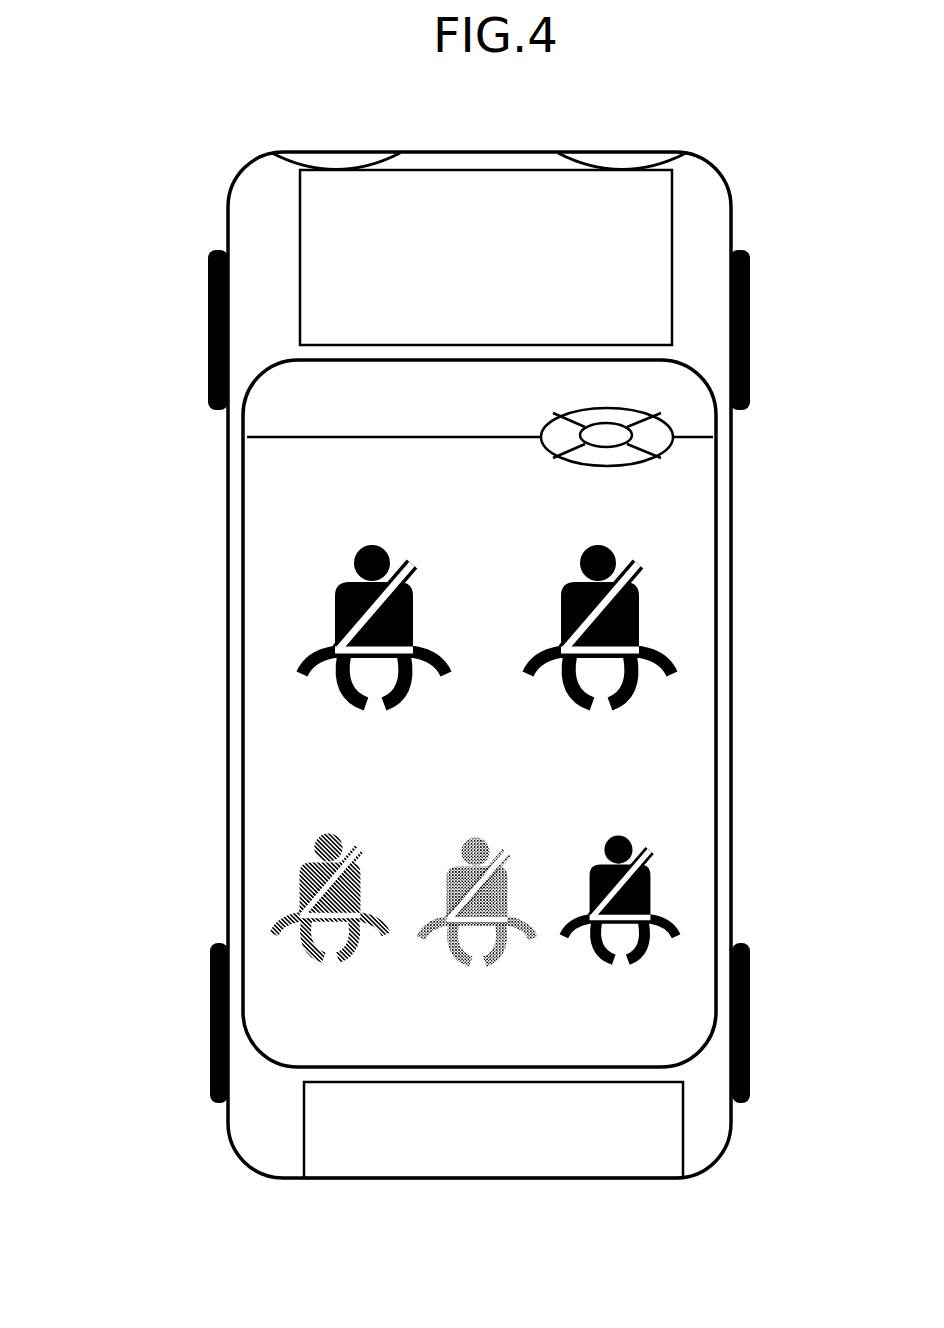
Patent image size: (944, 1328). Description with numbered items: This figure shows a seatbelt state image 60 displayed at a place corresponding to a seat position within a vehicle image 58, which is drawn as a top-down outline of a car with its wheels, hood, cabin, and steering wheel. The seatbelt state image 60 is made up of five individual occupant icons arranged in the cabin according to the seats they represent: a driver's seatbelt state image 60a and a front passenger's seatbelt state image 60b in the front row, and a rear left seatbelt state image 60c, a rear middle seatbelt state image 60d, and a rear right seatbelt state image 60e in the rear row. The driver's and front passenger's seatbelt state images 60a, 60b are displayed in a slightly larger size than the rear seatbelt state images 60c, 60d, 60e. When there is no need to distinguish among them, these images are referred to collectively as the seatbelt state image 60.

The vehicle image 58 is at (730, 205).
The seatbelt state image 60 is at (118, 566).
The driver's seatbelt state image 60a is at (635, 593).
The front passenger's seatbelt state image 60b is at (338, 600).
The rear left seatbelt state image 60c is at (300, 893).
The rear middle seatbelt state image 60d is at (490, 957).
The rear right seatbelt state image 60e is at (650, 898).